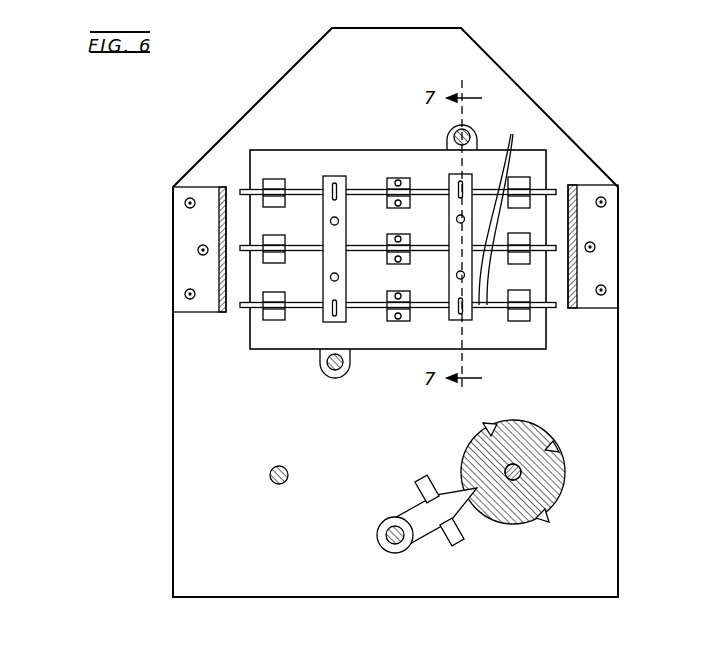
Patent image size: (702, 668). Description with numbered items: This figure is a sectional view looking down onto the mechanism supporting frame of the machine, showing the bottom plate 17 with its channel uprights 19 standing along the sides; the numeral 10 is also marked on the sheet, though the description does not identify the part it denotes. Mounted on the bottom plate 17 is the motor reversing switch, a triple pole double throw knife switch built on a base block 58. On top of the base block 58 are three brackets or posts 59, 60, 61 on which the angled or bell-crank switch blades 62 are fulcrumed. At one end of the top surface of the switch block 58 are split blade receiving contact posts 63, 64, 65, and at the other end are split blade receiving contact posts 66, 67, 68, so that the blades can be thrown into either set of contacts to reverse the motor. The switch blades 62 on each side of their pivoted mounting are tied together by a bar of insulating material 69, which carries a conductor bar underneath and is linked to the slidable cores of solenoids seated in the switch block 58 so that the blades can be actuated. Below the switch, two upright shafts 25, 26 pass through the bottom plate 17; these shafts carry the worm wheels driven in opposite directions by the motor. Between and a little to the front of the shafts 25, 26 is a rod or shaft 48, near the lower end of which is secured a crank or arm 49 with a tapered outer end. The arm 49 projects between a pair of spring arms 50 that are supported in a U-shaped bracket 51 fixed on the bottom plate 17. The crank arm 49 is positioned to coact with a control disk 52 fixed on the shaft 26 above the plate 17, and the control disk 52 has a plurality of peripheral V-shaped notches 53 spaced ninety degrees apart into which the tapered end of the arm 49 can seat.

The left mounting bracket 10 is at (221, 222).
The channel uprights 19 is at (584, 218).
The bottom plate 17 is at (395, 312).
The upright shaft 25 is at (268, 476).
The upright shaft 26 is at (521, 474).
The rod or shaft 48 is at (377, 536).
The crank or arm 49 is at (407, 513).
The spring arms 50 is at (455, 530).
The U-shaped bracket 51 is at (428, 478).
The control disk 52 is at (534, 471).
The peripheral V-shaped notches 53 is at (494, 428).
The base block 58 is at (308, 334).
The bracket or post 59 is at (402, 314).
The bracket or post 60 is at (405, 260).
The bracket or post 61 is at (405, 204).
The switch blades 62 is at (500, 209).
The split blade receiving contact post 63 is at (272, 313).
The split blade receiving contact post 64 is at (276, 264).
The split blade receiving contact post 65 is at (276, 208).
The split blade receiving contact post 66 is at (521, 311).
The split blade receiving contact post 67 is at (519, 258).
The split blade receiving contact post 68 is at (519, 203).
The bar of insulating material 69 is at (340, 237).